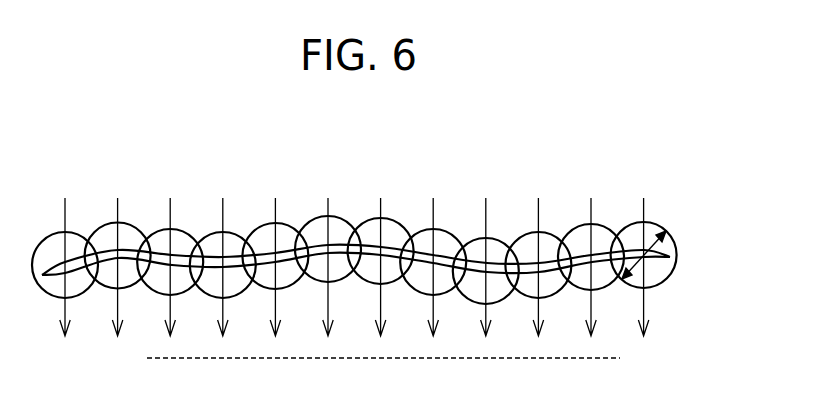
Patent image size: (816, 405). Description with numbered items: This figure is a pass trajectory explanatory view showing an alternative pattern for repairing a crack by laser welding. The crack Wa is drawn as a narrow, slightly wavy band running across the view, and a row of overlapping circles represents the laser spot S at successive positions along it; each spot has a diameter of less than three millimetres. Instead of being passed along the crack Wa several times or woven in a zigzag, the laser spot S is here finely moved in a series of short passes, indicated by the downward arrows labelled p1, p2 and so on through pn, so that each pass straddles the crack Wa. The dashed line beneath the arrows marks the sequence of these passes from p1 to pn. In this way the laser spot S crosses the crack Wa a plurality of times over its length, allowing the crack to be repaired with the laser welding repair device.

The crack Wa is at (320, 250).
The laser spot S is at (398, 222).
The pass p1 is at (64, 284).
The pass p2 is at (117, 284).
The pass pn is at (641, 284).